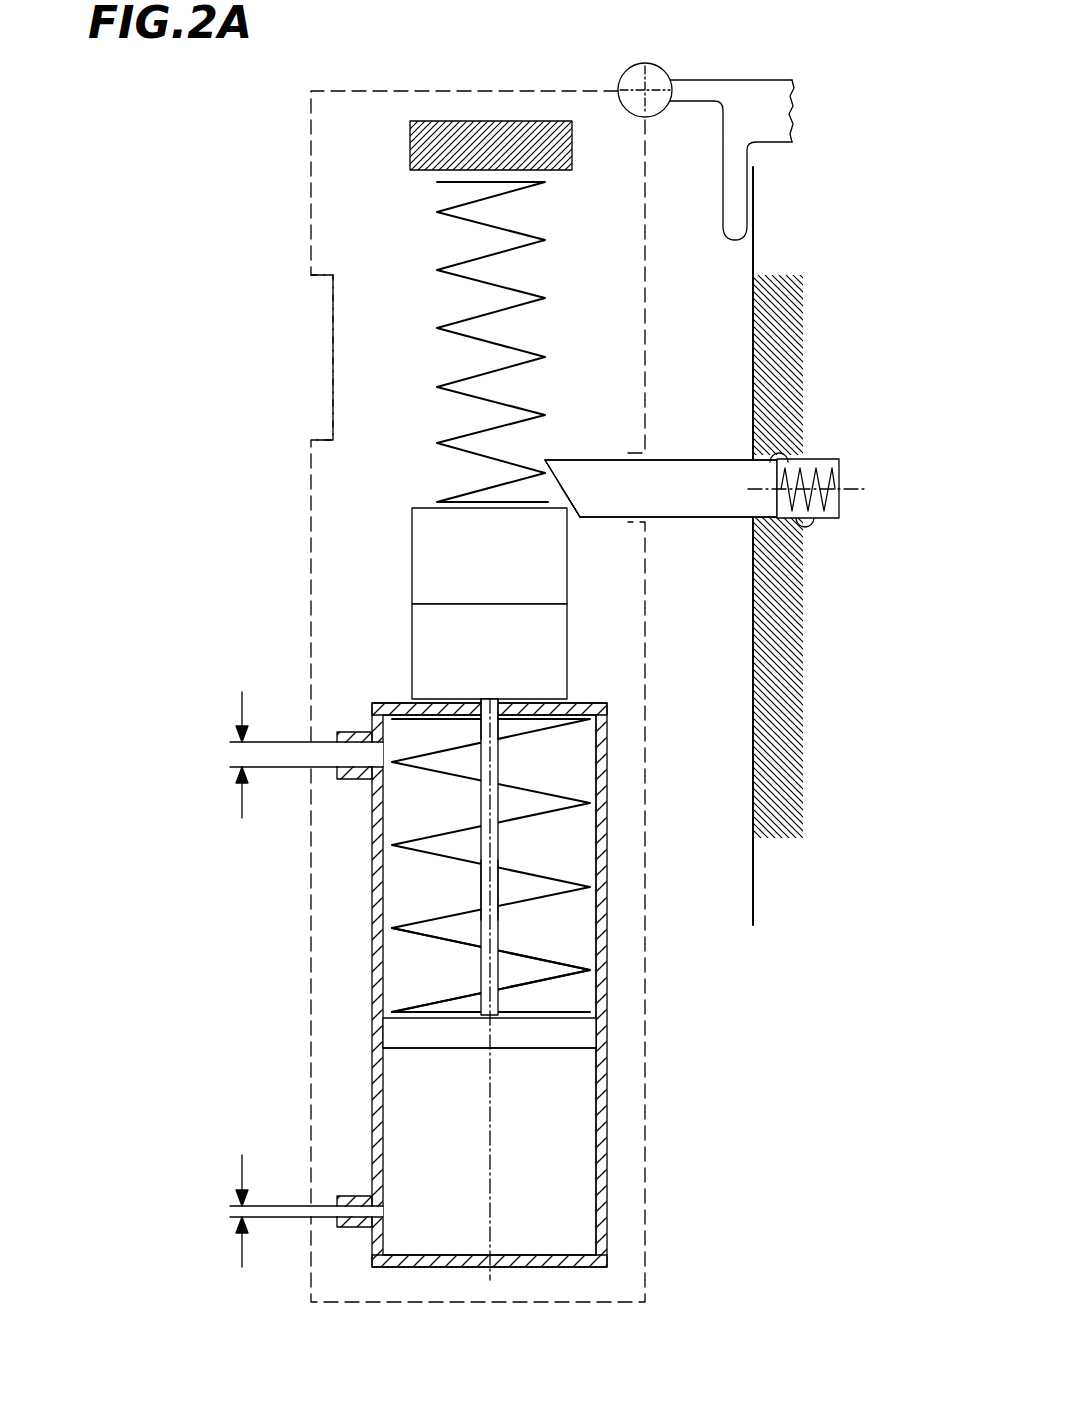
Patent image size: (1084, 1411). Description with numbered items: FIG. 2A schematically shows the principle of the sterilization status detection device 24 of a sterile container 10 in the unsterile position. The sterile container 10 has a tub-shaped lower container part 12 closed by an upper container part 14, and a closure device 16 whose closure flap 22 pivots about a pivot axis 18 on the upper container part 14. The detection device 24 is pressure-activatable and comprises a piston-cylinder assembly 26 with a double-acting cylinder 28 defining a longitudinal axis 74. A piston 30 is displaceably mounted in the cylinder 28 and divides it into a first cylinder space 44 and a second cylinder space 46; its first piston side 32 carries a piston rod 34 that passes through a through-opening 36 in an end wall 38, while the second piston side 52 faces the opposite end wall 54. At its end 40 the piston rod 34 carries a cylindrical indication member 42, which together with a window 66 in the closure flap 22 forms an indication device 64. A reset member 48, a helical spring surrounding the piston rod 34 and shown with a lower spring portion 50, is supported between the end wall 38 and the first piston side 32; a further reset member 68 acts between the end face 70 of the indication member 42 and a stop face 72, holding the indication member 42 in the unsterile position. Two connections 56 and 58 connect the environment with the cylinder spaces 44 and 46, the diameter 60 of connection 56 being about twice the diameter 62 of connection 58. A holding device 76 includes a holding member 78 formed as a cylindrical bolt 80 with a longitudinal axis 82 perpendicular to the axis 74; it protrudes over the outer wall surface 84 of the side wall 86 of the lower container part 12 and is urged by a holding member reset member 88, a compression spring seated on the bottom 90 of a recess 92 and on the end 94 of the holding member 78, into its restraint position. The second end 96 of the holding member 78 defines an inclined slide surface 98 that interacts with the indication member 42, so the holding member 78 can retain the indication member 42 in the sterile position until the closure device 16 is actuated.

The sterile container 10 is at (250, 1090).
The lower container part 12 is at (744, 662).
The upper container part 14 is at (712, 170).
The closure device 16 is at (290, 943).
The pivot axis 18 is at (648, 88).
The closure flap 22 is at (290, 1005).
The sterilization status detection device 24 is at (290, 853).
The piston-cylinder assembly 26 is at (626, 882).
The cylinder 28 is at (600, 855).
The piston 30 is at (578, 1040).
The first piston side 32 is at (562, 1015).
The piston rod 34 is at (490, 888).
The through-opening 36 is at (483, 720).
The end wall 38 is at (400, 710).
The end of the piston rod 40 is at (492, 700).
The indication member 42 is at (478, 658).
The first cylinder space 44 is at (386, 956).
The second cylinder space 46 is at (386, 1100).
The reset member 48 is at (572, 795).
The spring portion 50 is at (556, 948).
The second piston side 52 is at (545, 1050).
The end wall 54 is at (560, 1256).
The connection 56 is at (360, 757).
The connection 58 is at (365, 1212).
The diameter 60 is at (240, 755).
The diameter 62 is at (240, 1212).
The indication device 64 is at (290, 390).
The window 66 is at (330, 318).
The further reset member 68 is at (520, 253).
The end face 70 is at (425, 508).
The stop face 72 is at (422, 171).
The longitudinal axis 74 is at (492, 1180).
The holding device 76 is at (741, 532).
The holding member 78 is at (598, 483).
The cylindrical bolt 80 is at (682, 485).
The longitudinal axis 82 is at (856, 482).
The wall surface 84 is at (752, 312).
The side wall 86 is at (790, 316).
The holding member reset member 88 is at (812, 470).
The bottom 90 is at (840, 517).
The recess 92 is at (810, 522).
The end of the holding member 94 is at (775, 457).
The second end 96 is at (548, 484).
The slide surface 98 is at (565, 498).